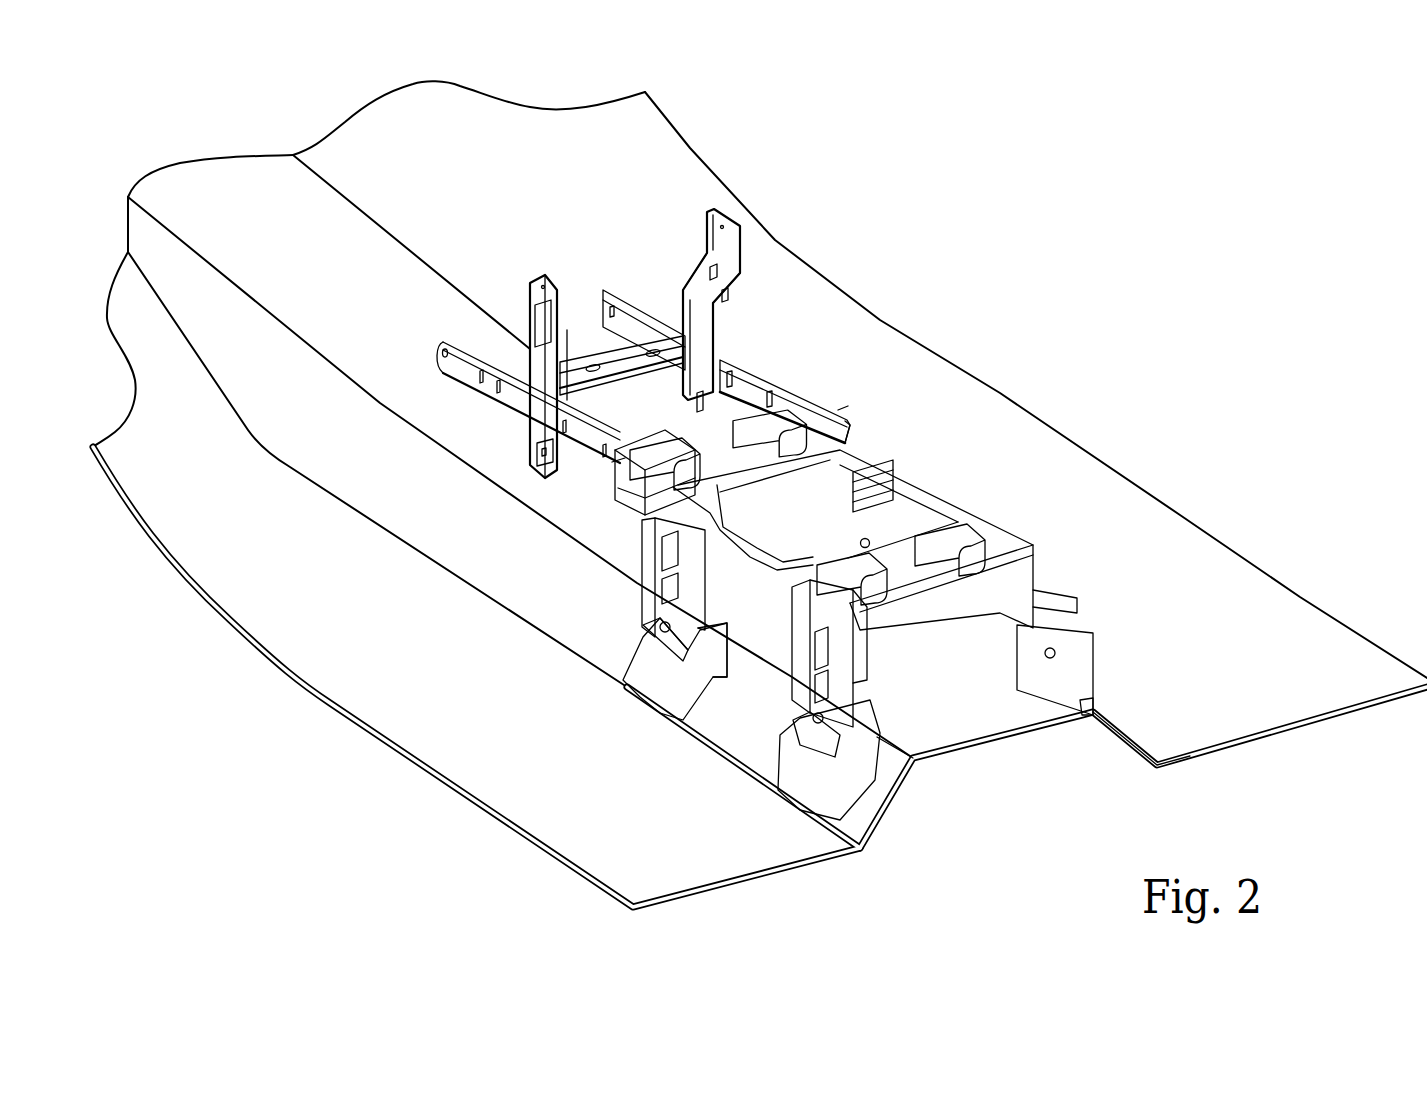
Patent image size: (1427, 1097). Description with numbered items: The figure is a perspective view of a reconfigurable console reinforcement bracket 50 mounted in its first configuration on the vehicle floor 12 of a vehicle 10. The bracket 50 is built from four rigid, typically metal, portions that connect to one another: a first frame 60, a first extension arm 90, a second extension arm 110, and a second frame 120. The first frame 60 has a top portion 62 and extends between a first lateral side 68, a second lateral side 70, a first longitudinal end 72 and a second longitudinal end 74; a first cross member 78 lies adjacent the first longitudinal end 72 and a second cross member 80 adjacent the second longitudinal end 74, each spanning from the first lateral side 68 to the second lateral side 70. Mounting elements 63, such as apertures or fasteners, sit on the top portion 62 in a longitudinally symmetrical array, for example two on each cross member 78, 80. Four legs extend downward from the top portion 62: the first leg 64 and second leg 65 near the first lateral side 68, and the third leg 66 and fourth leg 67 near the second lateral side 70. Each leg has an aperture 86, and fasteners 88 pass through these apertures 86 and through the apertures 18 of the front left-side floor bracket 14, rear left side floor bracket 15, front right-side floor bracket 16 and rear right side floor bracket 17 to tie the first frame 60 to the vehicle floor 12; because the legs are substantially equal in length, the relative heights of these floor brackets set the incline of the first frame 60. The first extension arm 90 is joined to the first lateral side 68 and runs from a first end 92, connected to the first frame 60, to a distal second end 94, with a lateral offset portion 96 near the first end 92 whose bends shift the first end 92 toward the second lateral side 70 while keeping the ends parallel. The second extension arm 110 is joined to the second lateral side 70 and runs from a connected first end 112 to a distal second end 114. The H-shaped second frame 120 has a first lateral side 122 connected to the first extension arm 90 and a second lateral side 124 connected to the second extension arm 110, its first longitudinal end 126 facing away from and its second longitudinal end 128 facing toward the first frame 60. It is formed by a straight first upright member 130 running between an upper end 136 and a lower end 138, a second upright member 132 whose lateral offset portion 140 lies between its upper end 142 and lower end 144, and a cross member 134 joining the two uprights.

The vehicle 10 is at (760, 485).
The vehicle floor 12 is at (197, 173).
The front left-side floor bracket 14 is at (627, 680).
The rear left side floor bracket 15 is at (810, 797).
The front right-side floor bracket 16 is at (830, 525).
The rear right side floor bracket 17 is at (1095, 712).
The aperture 18 is at (1055, 654).
The reconfigurable console reinforcement bracket 50 is at (755, 485).
The first frame 60 is at (868, 503).
The top portion 62 is at (889, 527).
The mounting elements 63 is at (839, 402).
The first leg 64 is at (636, 597).
The second leg 65 is at (913, 758).
The third leg 66 is at (856, 484).
The fourth leg 67 is at (1040, 580).
The first lateral side 68 is at (637, 532).
The second lateral side 70 is at (953, 488).
The first longitudinal end 72 is at (718, 445).
The second longitudinal end 74 is at (950, 595).
The first cross member 78 is at (762, 414).
The second cross member 80 is at (905, 580).
The aperture 86 is at (670, 627).
The fasteners 88 is at (660, 670).
The first extension arm 90 is at (548, 418).
The first end 92 is at (640, 488).
The second end 94 is at (445, 345).
The lateral offset portion 96 is at (640, 497).
The second extension arm 110 is at (825, 388).
The first end 112 is at (847, 430).
The second end 114 is at (607, 325).
The second frame 120 is at (656, 307).
The first lateral side 122 is at (515, 340).
The second lateral side 124 is at (750, 278).
The first longitudinal end 126 is at (700, 285).
The second longitudinal end 128 is at (714, 303).
The first upright member 130 is at (533, 294).
The second upright member 132 is at (683, 290).
The cross member 134 is at (600, 363).
The upper end 136 is at (530, 285).
The lower end 138 is at (533, 462).
The lateral offset portion 140 is at (742, 305).
The upper end 142 is at (728, 212).
The lower end 144 is at (692, 408).